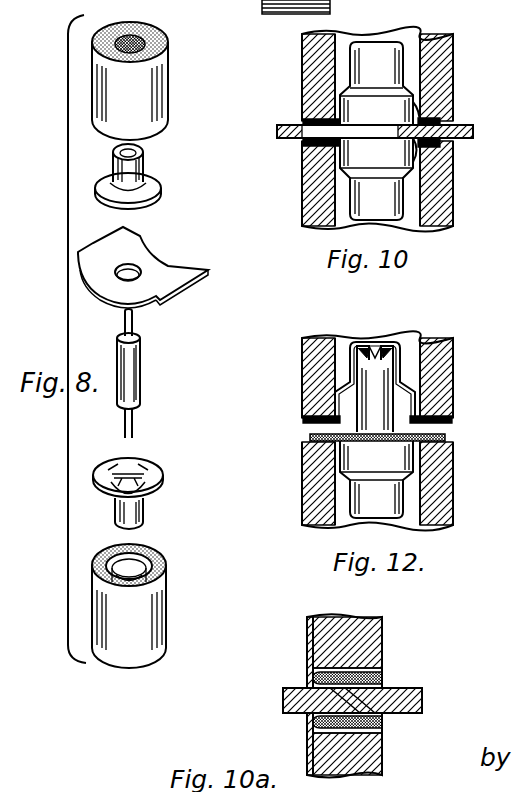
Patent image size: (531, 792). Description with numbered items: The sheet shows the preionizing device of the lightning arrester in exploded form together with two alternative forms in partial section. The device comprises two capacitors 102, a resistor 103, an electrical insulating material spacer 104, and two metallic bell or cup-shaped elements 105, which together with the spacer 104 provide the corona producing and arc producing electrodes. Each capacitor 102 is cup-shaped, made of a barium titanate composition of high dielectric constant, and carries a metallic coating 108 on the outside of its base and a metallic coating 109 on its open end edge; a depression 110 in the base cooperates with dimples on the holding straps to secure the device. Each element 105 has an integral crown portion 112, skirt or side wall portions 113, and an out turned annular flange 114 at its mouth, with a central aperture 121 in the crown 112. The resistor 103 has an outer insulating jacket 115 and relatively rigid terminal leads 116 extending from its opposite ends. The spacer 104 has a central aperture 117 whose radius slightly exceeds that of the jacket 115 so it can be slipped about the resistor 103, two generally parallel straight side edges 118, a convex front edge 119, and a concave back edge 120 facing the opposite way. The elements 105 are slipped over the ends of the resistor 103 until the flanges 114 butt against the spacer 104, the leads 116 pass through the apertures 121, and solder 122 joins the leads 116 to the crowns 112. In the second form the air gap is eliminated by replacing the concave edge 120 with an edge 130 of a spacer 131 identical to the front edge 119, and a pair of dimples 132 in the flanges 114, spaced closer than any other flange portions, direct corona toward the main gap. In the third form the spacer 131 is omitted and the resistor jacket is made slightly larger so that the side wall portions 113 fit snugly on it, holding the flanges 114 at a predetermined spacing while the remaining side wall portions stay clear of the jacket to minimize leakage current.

In FIG. 8, the capacitor 102 is at (172, 86).
In FIG. 10, the capacitor 102 is at (424, 31).
In FIG. 12, the capacitor 102 is at (457, 352).
In FIG. 8, the resistor 103 is at (142, 364).
In FIG. 12, the resistor 103 is at (375, 389).
In FIG. 8, the electrical insulating material spacer 104 is at (210, 271).
In FIG. 8, the metallic bell or cup-shaped element 105 is at (165, 176).
In FIG. 10, the metallic bell or cup-shaped element 105 is at (376, 131).
In FIG. 12, the metallic bell or cup-shaped element 105 is at (376, 479).
In FIG. 8, the metallic coating 108 is at (137, 22).
In FIG. 10, the metallic coating 109 is at (306, 150).
In FIG. 12, the metallic coating 109 is at (310, 432).
In FIG. 10A, the metallic coating 109 is at (378, 679).
In FIG. 8, the depression 110 is at (166, 43).
In FIG. 8, the crown or base portion 112 is at (140, 150).
In FIG. 12, the crown or base portion 112 is at (358, 342).
In FIG. 8, the skirt or side wall portion 113 is at (150, 166).
In FIG. 10, the skirt or side wall portion 113 is at (350, 66).
In FIG. 12, the skirt or side wall portion 113 is at (404, 344).
In FIG. 8, the out turned annular flange portion 114 is at (160, 206).
In FIG. 8, the electrical insulating material jacket 115 is at (141, 386).
In FIG. 8, the terminal wire or lead 116 is at (133, 328).
In FIG. 12, the terminal wire or lead 116 is at (376, 344).
In FIG. 8, the aperture 117 is at (126, 260).
In FIG. 8, the straight side edge 118 is at (104, 245).
In FIG. 8, the front or outside edge 119 is at (104, 305).
In FIG. 8, the back or inside edge 120 is at (170, 266).
In FIG. 8, the central aperture 121 is at (112, 152).
In FIG. 12, the solder 122 is at (366, 344).
In FIG. 10, the edge 130 is at (476, 132).
In FIG. 10A, the edge 130 is at (425, 700).
In FIG. 10, the spacer 131 is at (292, 128).
In FIG. 10A, the spacer 131 is at (283, 705).
In FIG. 10, the dimple 132 is at (446, 152).
In FIG. 12, the dimple 132 is at (440, 432).
In FIG. 10A, the dimple 132 is at (352, 672).